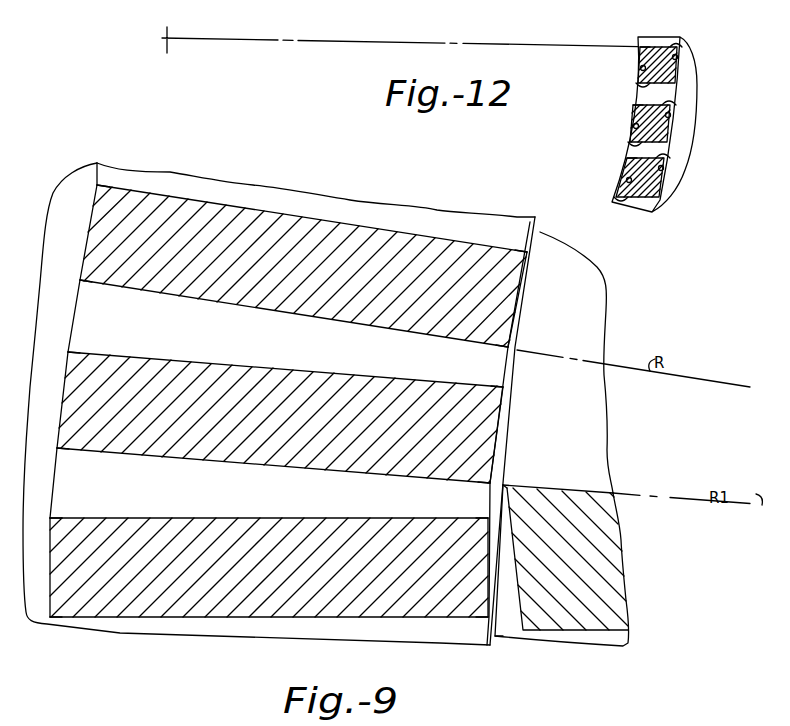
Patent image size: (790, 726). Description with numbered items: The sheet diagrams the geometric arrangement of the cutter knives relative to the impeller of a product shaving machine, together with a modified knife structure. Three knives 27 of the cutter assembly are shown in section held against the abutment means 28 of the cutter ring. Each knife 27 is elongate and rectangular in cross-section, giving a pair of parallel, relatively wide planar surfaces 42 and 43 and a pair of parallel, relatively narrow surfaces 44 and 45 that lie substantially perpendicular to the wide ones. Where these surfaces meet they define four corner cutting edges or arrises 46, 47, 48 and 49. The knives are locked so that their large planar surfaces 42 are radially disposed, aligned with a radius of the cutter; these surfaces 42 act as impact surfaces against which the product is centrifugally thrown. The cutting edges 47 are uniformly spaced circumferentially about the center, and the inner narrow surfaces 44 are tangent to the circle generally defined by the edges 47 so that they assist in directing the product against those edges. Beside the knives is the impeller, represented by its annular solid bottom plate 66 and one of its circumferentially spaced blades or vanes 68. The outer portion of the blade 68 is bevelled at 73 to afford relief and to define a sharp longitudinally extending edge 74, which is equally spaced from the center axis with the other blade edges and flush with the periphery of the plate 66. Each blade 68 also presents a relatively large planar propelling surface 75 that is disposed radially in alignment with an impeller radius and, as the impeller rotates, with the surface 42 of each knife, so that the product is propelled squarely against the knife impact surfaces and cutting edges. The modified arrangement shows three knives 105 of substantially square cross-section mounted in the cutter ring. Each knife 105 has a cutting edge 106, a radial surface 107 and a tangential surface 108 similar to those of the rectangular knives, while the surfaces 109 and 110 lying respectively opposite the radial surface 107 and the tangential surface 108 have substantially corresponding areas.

In FIG. 9, the knives 27 is at (426, 231).
In FIG. 9, the abutment means 28 is at (64, 193).
In FIG. 9, the planar surface 42 is at (410, 332).
In FIG. 9, the planar surface 43 is at (167, 196).
In FIG. 9, the narrow surface 44 is at (527, 268).
In FIG. 9, the narrow surface 45 is at (82, 266).
In FIG. 9, the corner cutting edge 46 is at (81, 283).
In FIG. 9, the corner cutting edge 47 is at (508, 347).
In FIG. 9, the corner cutting edge 48 is at (527, 251).
In FIG. 9, the corner cutting edge 49 is at (97, 185).
In FIG. 9, the bottom plate 66 is at (598, 412).
In FIG. 9, the blades 68 is at (618, 559).
In FIG. 9, the bevel 73 is at (503, 636).
In FIG. 9, the longitudinally extending edge 74 is at (503, 485).
In FIG. 9, the propelling surface 75 is at (558, 490).
In FIG. 12, the knives 105 is at (680, 72).
In FIG. 12, the cutting edge 106 is at (640, 47).
In FIG. 12, the radial surface 107 is at (682, 40).
In FIG. 12, the tangential surface 108 is at (640, 68).
In FIG. 12, the surface 109 is at (640, 88).
In FIG. 12, the surface 110 is at (678, 57).